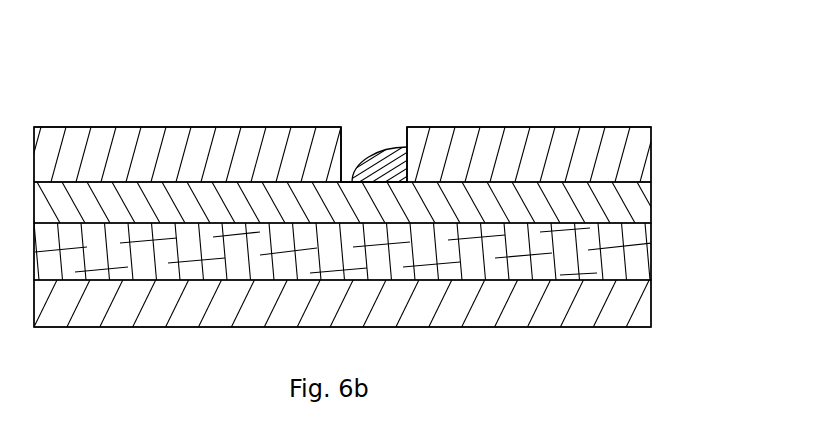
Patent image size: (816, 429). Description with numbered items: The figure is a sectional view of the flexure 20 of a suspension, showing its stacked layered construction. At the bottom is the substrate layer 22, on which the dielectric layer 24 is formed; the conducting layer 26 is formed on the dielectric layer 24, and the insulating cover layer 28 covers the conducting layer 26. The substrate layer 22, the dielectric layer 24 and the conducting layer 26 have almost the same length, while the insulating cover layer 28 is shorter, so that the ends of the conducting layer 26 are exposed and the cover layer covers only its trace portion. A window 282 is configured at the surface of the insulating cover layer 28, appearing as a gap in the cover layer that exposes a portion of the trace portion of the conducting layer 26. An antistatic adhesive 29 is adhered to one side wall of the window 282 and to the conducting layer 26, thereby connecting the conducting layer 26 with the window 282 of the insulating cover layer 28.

The flexure 20 is at (88, 55).
The substrate layer 22 is at (607, 303).
The dielectric layer 24 is at (615, 255).
The conducting layer 26 is at (597, 205).
The insulating cover layer 28 is at (597, 155).
The window 282 is at (362, 148).
The antistatic adhesive 29 is at (392, 167).